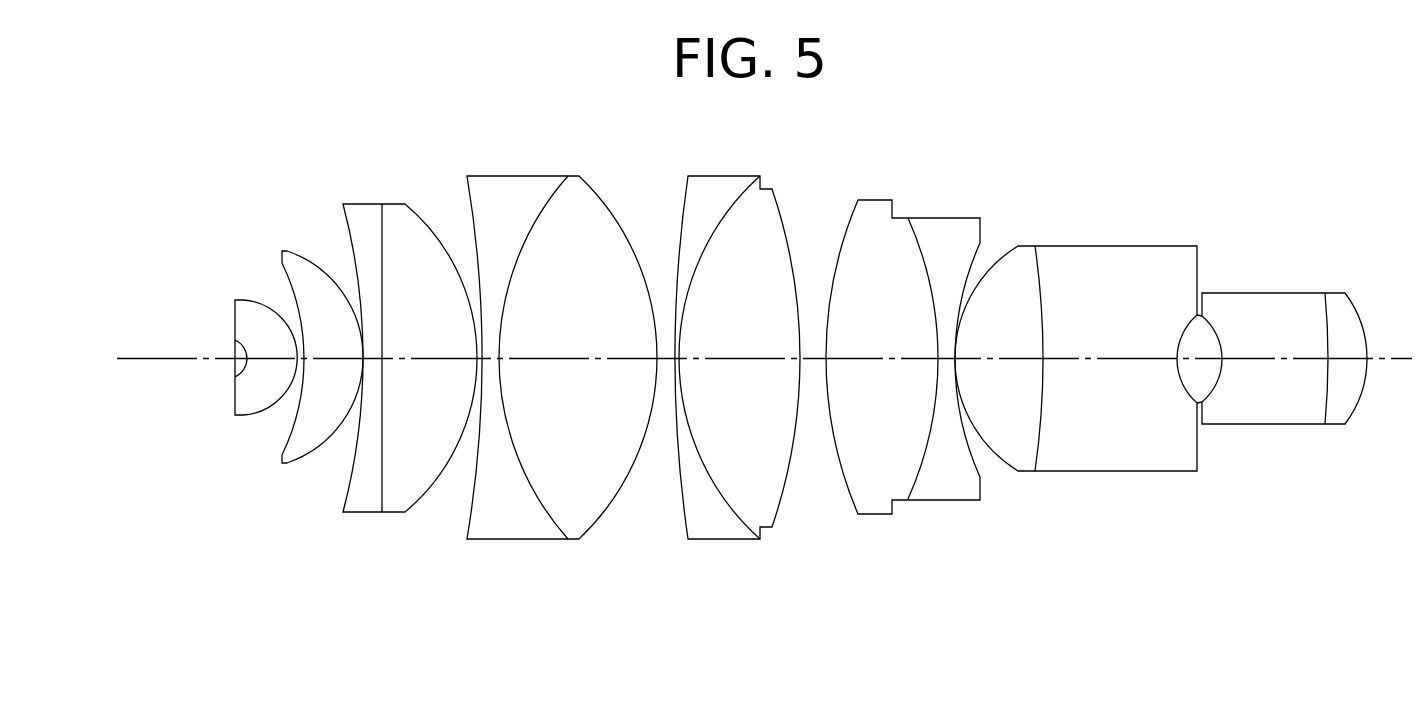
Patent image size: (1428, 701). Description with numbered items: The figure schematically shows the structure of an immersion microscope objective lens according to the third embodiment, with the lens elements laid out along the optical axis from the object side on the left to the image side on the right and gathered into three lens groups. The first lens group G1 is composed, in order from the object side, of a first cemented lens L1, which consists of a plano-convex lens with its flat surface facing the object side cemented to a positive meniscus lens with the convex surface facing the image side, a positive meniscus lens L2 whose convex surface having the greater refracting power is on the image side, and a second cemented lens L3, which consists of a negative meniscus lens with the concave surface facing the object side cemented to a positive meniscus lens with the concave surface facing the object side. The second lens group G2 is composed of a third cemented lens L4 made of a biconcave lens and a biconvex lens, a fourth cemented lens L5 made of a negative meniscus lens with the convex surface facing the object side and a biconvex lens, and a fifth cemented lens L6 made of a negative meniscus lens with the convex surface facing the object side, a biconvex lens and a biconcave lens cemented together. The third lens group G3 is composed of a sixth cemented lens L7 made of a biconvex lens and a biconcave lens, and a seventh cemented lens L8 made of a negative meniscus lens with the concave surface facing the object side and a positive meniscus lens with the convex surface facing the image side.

The first cemented lens L1 is at (250, 417).
The positive meniscus lens L2 is at (308, 463).
The second cemented lens L3 is at (410, 403).
The third cemented lens L4 is at (533, 539).
The fourth cemented lens L5 is at (713, 539).
The fifth cemented lens L6 is at (903, 398).
The sixth cemented lens L7 is at (1060, 471).
The seventh cemented lens L8 is at (1284, 405).
The first lens group G1 is at (351, 433).
The second lens group G2 is at (723, 433).
The third lens group G3 is at (1161, 438).